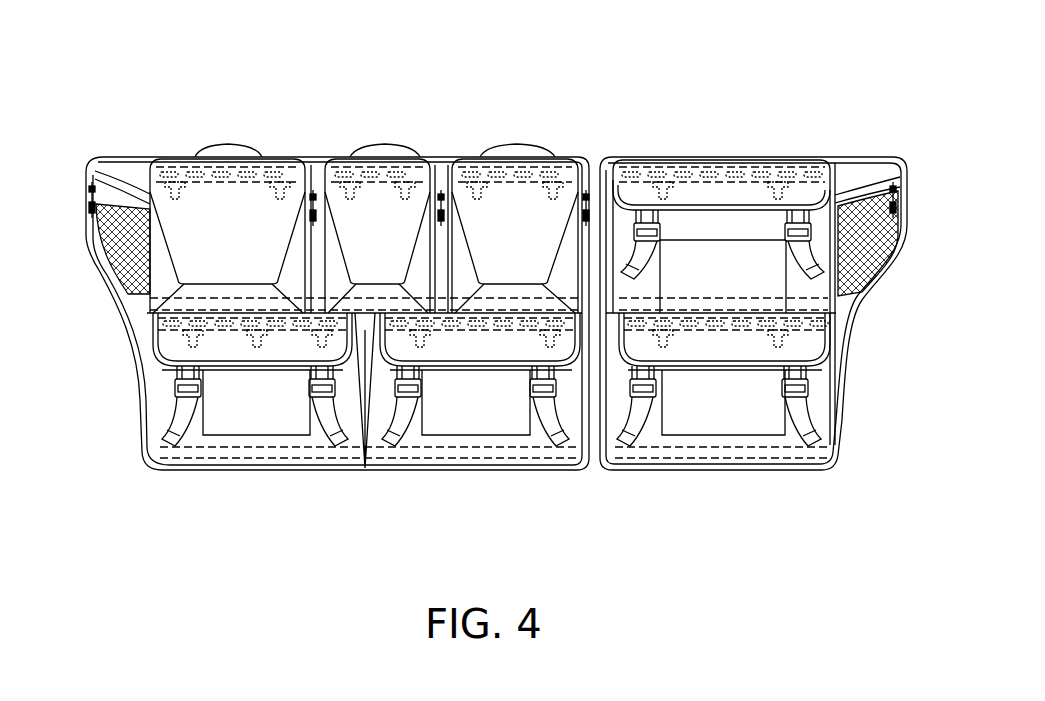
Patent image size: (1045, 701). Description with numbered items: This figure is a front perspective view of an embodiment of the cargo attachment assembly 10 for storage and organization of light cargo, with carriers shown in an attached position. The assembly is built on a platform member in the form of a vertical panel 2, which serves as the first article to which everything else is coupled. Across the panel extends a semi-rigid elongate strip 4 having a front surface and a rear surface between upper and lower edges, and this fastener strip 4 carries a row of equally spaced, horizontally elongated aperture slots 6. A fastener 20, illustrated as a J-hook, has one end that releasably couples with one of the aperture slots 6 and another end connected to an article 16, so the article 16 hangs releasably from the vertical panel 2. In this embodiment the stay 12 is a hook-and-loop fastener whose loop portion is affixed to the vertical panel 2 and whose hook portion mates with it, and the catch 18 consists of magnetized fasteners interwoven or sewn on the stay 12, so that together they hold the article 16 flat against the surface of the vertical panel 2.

The attachment assembly 10 is at (796, 80).
The vertical panel 2 is at (115, 177).
The elongate strip 4 is at (128, 304).
The aperture slots 6 is at (240, 326).
The fastener 20 is at (394, 148).
The stay member 12 is at (838, 445).
The catch 18 is at (867, 236).
The article 16 is at (674, 264).